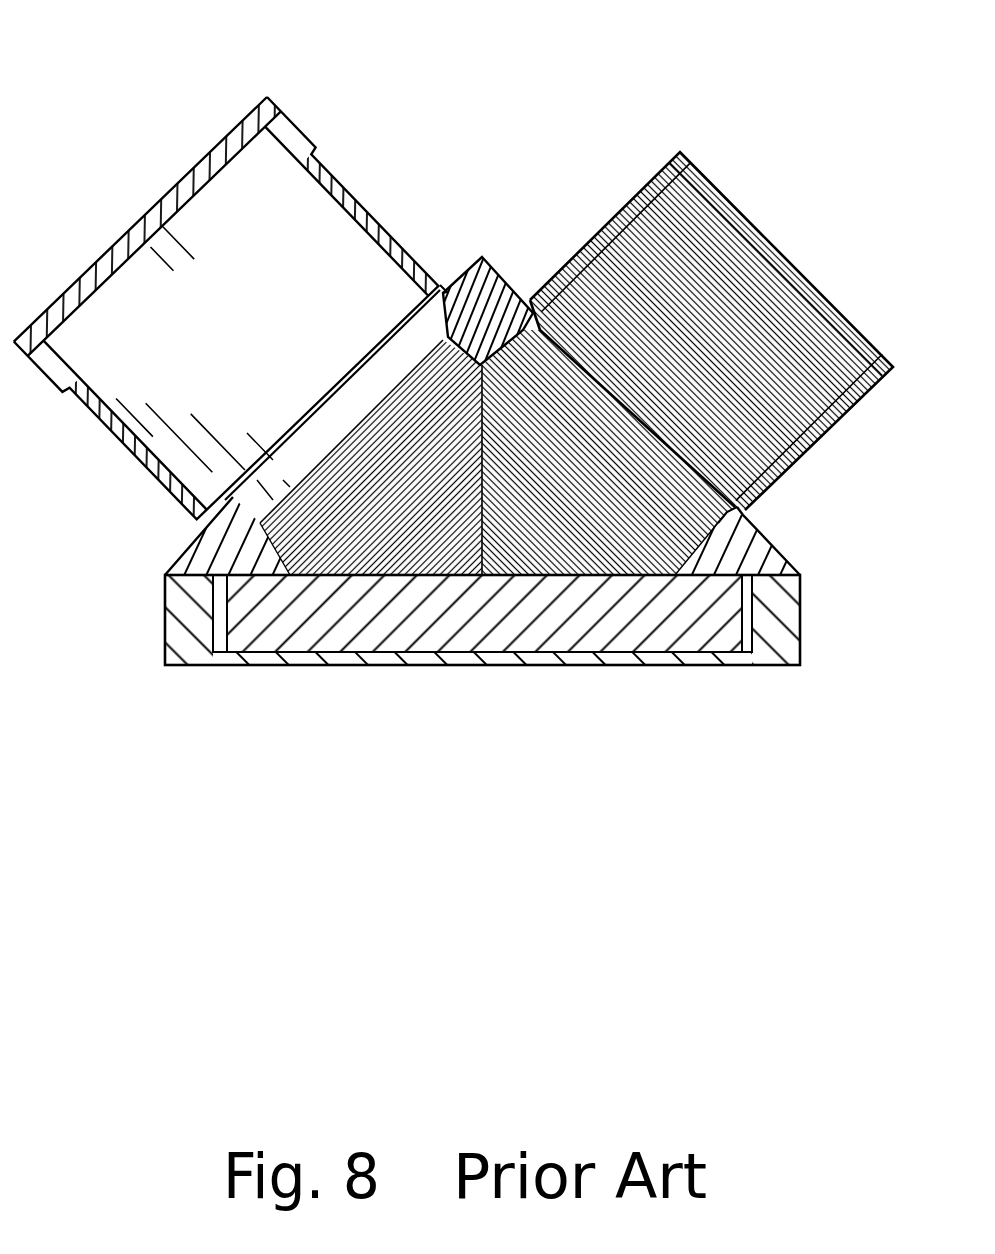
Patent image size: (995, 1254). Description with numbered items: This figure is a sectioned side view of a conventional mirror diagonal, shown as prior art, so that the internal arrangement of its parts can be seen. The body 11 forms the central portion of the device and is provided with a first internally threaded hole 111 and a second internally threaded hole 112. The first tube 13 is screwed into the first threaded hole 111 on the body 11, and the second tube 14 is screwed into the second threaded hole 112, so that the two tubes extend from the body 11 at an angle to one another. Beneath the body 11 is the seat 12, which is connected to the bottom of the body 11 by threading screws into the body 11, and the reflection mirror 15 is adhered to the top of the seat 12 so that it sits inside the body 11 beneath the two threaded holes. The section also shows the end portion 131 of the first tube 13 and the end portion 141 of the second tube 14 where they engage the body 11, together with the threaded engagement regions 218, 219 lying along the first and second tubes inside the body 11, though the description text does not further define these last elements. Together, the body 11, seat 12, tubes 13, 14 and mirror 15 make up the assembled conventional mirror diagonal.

The body 11 is at (233, 558).
The seat 12 is at (790, 625).
The first tube 13 is at (215, 215).
The second tube 14 is at (695, 255).
The reflection mirror 15 is at (327, 625).
The first internally threaded hole 111 is at (484, 262).
The second internally threaded hole 112 is at (607, 657).
The end of first pipe 131 is at (447, 292).
The end of second pipe 141 is at (718, 523).
The left internal thread 218 is at (363, 420).
The right internal thread 219 is at (568, 385).